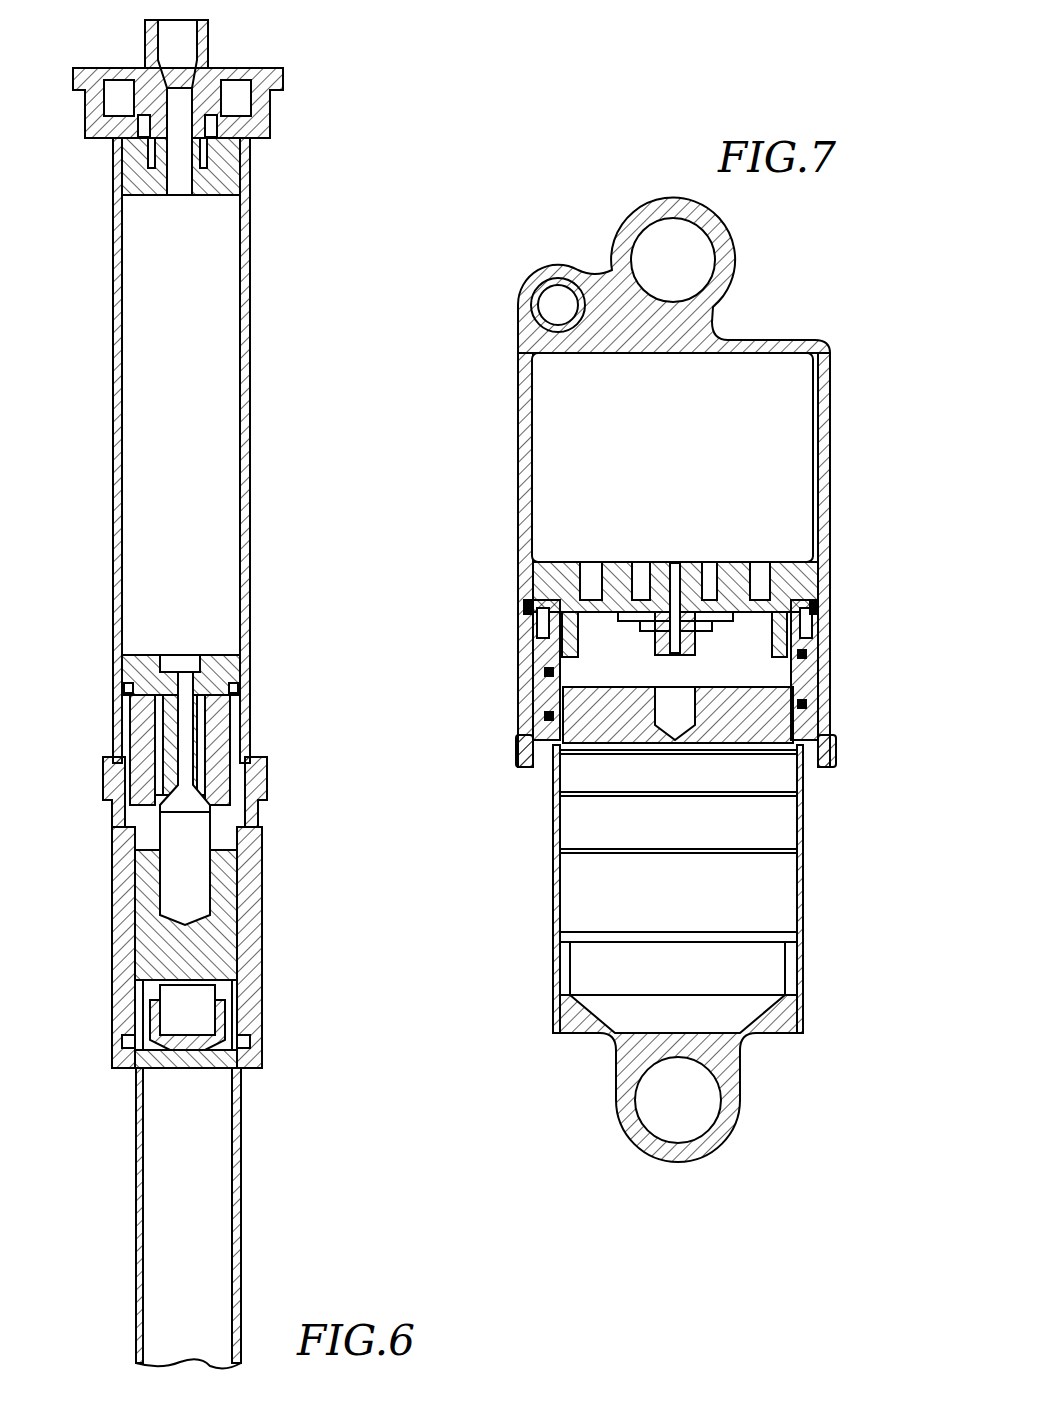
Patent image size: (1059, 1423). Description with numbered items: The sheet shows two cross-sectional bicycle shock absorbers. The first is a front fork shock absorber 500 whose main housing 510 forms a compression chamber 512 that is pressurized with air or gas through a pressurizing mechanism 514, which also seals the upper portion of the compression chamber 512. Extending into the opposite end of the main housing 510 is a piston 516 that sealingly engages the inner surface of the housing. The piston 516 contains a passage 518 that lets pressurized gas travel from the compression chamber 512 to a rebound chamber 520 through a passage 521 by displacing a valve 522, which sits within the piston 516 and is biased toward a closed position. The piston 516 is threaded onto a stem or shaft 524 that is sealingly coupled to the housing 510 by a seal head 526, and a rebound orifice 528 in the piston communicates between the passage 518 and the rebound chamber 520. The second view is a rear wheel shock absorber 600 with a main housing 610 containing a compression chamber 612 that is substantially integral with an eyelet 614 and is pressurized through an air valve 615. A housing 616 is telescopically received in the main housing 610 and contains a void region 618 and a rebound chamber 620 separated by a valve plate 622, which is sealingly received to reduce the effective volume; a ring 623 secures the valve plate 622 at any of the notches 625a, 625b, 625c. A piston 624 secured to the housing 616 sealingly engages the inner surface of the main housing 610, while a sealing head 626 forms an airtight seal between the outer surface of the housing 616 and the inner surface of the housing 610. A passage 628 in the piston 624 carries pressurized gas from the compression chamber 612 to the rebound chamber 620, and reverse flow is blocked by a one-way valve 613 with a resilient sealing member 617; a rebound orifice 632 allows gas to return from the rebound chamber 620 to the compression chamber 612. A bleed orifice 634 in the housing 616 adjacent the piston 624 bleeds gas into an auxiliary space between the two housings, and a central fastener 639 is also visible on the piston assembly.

In FIG. 6, the shock absorber 500 is at (78, 288).
In FIG. 6, the main housing 510 is at (125, 493).
In FIG. 6, the compression chamber 512 is at (150, 355).
In FIG. 6, the pressurizing mechanism 514 is at (208, 38).
In FIG. 6, the piston 516 is at (240, 692).
In FIG. 6, the passage 518 is at (192, 658).
In FIG. 6, the rebound chamber 520 is at (128, 782).
In FIG. 6, the passage 521 is at (225, 768).
In FIG. 6, the valve 522 is at (178, 840).
In FIG. 6, the stem or shaft 524 is at (158, 1203).
In FIG. 6, the seal head 526 is at (252, 935).
In FIG. 6, the rebound orifice 528 is at (165, 748).
In FIG. 7, the shock absorber 600 is at (498, 430).
In FIG. 7, the main housing 610 is at (518, 477).
In FIG. 7, the compression chamber 612 is at (795, 408).
In FIG. 7, the one-way valve 613 is at (728, 618).
In FIG. 7, the eyelet 614 is at (735, 275).
In FIG. 7, the air valve 615 is at (558, 290).
In FIG. 7, the housing 616 is at (805, 885).
In FIG. 7, the resilient sealing member 617 is at (622, 618).
In FIG. 7, the void region 618 is at (566, 908).
In FIG. 7, the rebound chamber 620 is at (562, 678).
In FIG. 7, the valve plate 622 is at (745, 735).
In FIG. 7, the ring 623 is at (540, 767).
In FIG. 7, the piston 624 is at (728, 562).
In FIG. 7, the notch 625a is at (566, 750).
In FIG. 7, the notch 625b is at (566, 798).
In FIG. 7, the notch 625c is at (566, 855).
In FIG. 7, the sealing head 626 is at (540, 612).
In FIG. 7, the passage 628 is at (642, 562).
In FIG. 7, the rebound orifice 632 is at (670, 728).
In FIG. 7, the bleed orifice 634 is at (550, 627).
In FIG. 7, the bolt 639 is at (710, 562).